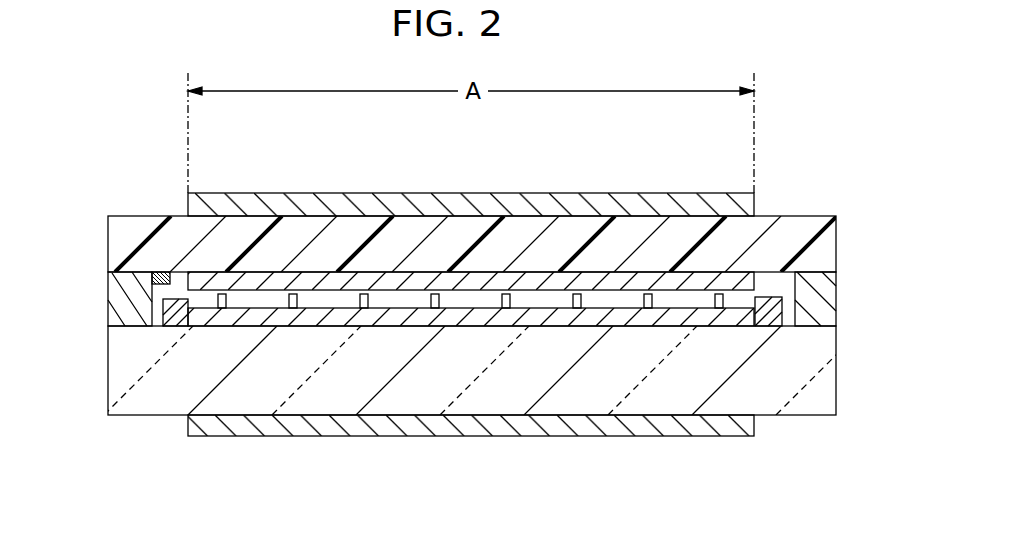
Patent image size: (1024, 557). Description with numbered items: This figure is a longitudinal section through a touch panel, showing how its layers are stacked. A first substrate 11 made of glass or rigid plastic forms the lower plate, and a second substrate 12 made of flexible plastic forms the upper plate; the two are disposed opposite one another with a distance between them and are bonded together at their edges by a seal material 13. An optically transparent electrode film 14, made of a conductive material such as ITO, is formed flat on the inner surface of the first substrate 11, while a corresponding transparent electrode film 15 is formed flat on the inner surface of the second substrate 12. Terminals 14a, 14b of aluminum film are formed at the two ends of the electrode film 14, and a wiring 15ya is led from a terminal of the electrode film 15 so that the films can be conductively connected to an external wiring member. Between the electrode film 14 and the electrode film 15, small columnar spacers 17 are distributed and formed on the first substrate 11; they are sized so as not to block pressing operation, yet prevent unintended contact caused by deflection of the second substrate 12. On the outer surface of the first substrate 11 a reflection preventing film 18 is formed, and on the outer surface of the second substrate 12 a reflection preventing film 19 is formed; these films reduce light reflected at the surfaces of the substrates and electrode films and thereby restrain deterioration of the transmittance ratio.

The first substrate 11 is at (828, 370).
The second substrate 12 is at (828, 247).
The seal material 13 is at (118, 303).
The electrode film 14 is at (262, 328).
The terminal 14a is at (175, 325).
The terminal 14b is at (770, 318).
The electrode film 15 is at (684, 290).
The wiring 15ya is at (163, 272).
The spacers 17 is at (368, 298).
The reflection preventing film 18 is at (595, 430).
The reflection preventing film 19 is at (555, 193).